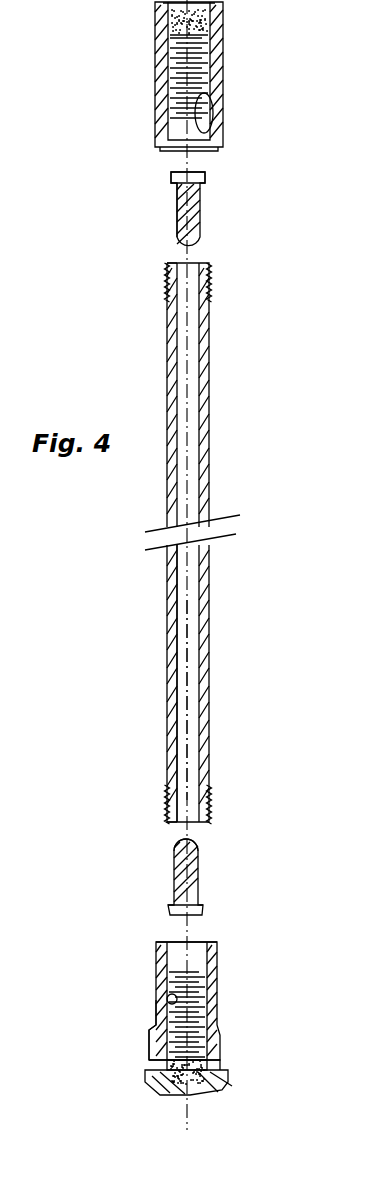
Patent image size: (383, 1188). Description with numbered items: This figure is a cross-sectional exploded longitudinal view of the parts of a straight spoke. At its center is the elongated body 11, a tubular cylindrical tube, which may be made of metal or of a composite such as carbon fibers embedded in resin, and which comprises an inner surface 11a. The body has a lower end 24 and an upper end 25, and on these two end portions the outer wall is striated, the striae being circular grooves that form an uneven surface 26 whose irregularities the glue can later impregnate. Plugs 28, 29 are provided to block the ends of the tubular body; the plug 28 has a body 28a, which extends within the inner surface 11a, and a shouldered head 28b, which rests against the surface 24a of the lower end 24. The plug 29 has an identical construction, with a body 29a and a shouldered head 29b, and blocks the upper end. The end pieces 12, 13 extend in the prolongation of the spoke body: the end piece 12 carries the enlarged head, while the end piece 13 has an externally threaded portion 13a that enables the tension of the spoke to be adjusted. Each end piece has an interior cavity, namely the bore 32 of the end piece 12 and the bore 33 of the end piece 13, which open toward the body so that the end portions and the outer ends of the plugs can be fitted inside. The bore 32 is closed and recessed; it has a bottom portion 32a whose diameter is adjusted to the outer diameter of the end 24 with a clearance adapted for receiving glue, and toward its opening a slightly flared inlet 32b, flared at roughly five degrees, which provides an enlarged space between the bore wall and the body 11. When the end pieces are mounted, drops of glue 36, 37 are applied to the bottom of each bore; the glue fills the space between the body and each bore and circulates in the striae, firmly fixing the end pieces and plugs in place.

The body 11 is at (210, 587).
The inner surface 11a is at (200, 643).
The end piece 12 is at (150, 1028).
The end piece 13 is at (213, 96).
The externally threaded portion 13a is at (222, 56).
The lower end 24 is at (214, 796).
The surface of the lower end 24a is at (167, 820).
The upper end 25 is at (216, 287).
The uneven surface 26 is at (167, 282).
The plug 28 is at (192, 890).
The body of plug 28a is at (192, 848).
The shouldered head 28b is at (168, 912).
The plug 29 is at (187, 192).
The body of plug 29a is at (177, 205).
The shouldered head 29b is at (171, 177).
The bore 32 is at (167, 996).
The bottom portion 32a is at (195, 1095).
The flared inlet 32b is at (168, 957).
The bore 33 is at (222, 136).
The glue 36 is at (210, 1066).
The glue 37 is at (205, 26).